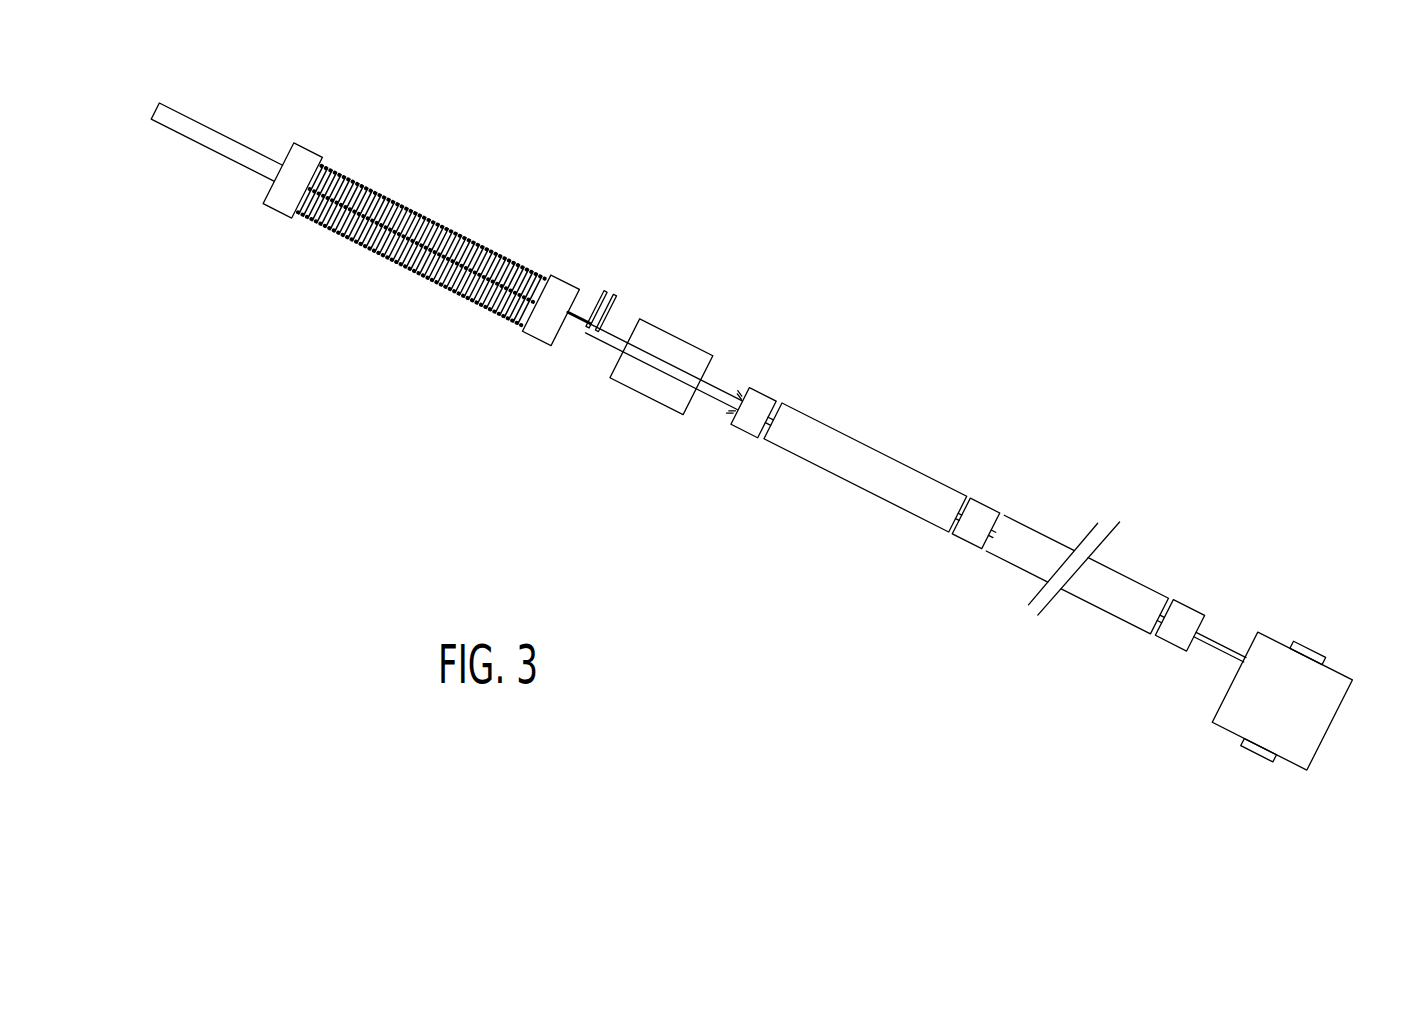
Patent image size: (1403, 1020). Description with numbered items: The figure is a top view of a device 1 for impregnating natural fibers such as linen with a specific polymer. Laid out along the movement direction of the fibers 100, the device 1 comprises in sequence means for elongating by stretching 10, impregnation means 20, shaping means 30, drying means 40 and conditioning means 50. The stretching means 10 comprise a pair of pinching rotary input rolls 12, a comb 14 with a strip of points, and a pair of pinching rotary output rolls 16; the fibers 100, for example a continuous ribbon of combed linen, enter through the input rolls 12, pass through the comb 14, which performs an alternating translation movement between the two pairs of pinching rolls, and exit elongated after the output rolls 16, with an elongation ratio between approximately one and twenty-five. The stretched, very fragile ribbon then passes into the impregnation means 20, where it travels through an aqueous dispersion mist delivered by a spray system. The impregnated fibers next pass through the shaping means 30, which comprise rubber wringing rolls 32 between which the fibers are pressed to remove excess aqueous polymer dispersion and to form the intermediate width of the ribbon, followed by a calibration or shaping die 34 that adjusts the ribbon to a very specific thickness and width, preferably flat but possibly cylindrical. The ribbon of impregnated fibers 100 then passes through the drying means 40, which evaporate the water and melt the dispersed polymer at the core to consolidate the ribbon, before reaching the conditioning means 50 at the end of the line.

The device 1 is at (883, 330).
The means for elongating by stretching 10 is at (396, 273).
The pinching rotary input rolls 12 is at (272, 207).
The comb 14 is at (448, 227).
The pinching rotary output rolls 16 is at (535, 336).
The impregnation means 20 is at (622, 282).
The shaping means 30 is at (697, 378).
The wringing rolls 32 is at (653, 392).
The calibration or shaping die 34 is at (747, 433).
The drying means 40 is at (960, 468).
The conditioning means 50 is at (1312, 637).
The fibers 100 is at (213, 138).